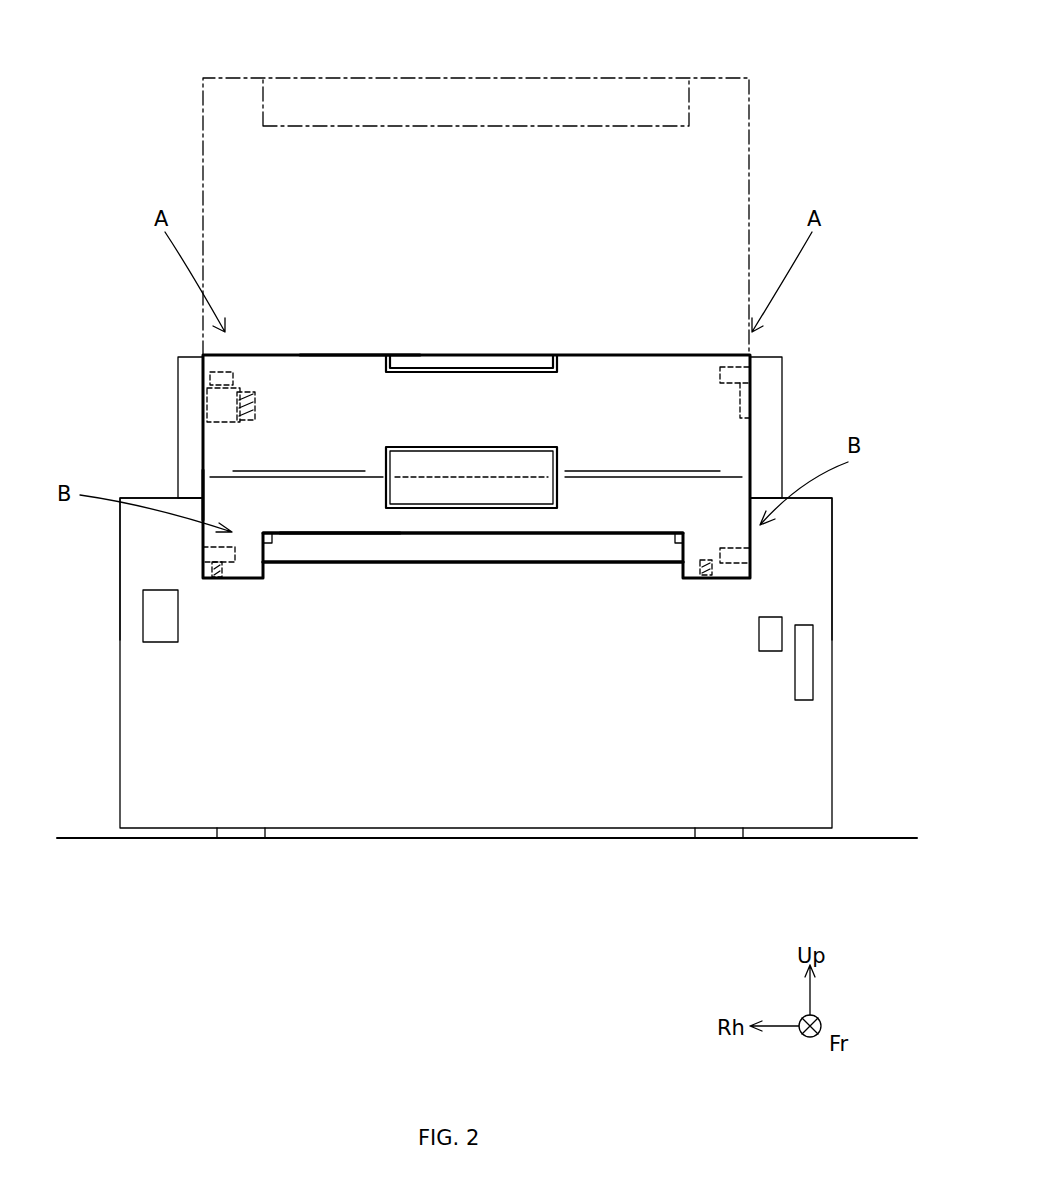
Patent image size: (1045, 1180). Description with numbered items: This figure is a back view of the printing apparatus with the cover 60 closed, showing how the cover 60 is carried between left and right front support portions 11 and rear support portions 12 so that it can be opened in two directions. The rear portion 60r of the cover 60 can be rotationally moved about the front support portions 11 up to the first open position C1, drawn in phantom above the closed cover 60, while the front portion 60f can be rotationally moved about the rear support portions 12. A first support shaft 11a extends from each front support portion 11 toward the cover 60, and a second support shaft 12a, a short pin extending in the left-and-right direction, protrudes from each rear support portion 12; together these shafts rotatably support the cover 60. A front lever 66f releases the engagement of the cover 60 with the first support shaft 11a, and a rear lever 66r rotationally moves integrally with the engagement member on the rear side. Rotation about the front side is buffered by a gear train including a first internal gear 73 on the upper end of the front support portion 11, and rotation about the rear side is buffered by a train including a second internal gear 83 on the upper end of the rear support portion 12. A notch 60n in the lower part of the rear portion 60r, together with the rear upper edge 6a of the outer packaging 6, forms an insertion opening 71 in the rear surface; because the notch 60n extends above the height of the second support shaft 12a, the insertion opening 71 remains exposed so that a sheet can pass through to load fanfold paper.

The first open position C1 is at (706, 78).
The cover 60 is at (345, 410).
The front portion of the cover 60f is at (357, 350).
The rear portion of the cover 60r is at (228, 497).
The notch 60n is at (340, 538).
The front lever 66f is at (518, 362).
The rear lever 66r is at (517, 472).
The insertion opening 71 is at (420, 542).
The first internal gear 73 is at (247, 393).
The second internal gear 83 is at (707, 580).
The front support portion 11 is at (190, 400).
The first support shaft 11a is at (200, 362).
The rear support portion 12 is at (163, 540).
The second support shaft 12a is at (220, 583).
The outer packaging 6 is at (545, 738).
The rear upper edge 6a is at (538, 565).